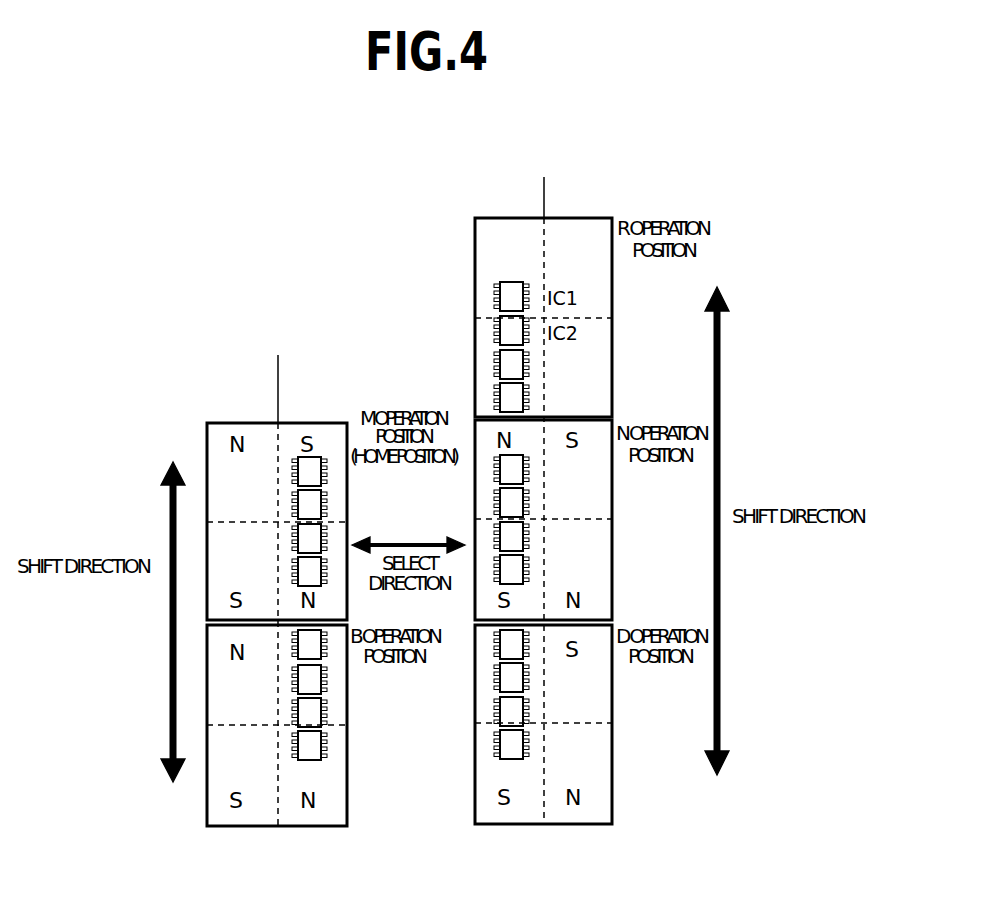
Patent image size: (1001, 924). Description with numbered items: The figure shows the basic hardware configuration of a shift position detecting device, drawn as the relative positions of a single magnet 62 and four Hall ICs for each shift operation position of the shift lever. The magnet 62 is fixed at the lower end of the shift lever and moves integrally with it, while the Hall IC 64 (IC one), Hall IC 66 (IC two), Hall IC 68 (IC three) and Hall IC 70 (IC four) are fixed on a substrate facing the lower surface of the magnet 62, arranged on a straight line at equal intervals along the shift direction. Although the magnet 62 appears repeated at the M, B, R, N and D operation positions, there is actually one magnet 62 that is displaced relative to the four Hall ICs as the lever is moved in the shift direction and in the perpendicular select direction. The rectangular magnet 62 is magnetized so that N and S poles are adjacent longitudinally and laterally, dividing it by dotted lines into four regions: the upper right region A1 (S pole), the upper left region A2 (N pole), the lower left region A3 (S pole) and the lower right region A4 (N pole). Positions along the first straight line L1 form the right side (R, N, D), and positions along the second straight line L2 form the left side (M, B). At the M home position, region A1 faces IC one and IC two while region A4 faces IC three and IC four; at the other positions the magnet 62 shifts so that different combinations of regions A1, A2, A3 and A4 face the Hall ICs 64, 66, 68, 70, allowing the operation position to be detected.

The magnet 62 is at (585, 208).
The Hall IC 64 is at (512, 297).
The Hall IC 66 is at (512, 332).
The Hall IC 68 is at (512, 365).
The Hall IC 70 is at (512, 397).
The region A1 is at (597, 281).
The region A2 is at (490, 228).
The region A3 is at (483, 413).
The region A4 is at (597, 368).
The first straight line L1 is at (546, 191).
The second straight line L2 is at (280, 384).